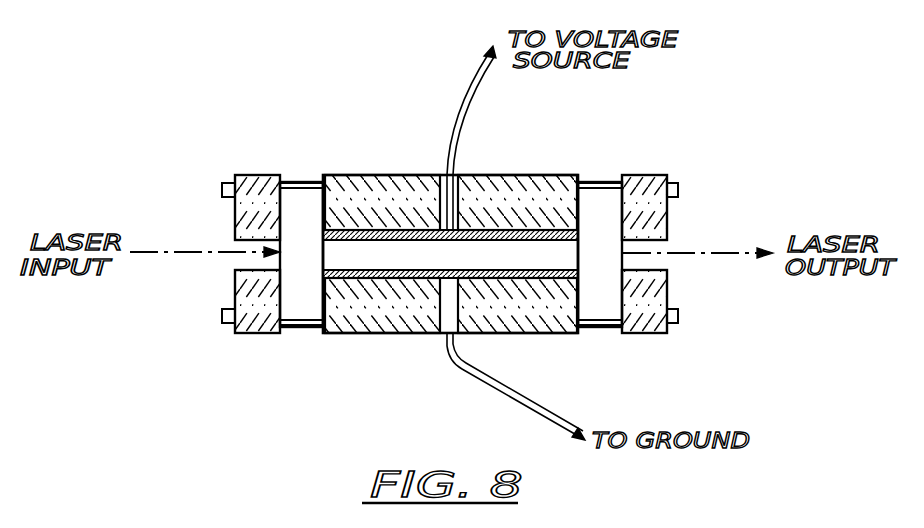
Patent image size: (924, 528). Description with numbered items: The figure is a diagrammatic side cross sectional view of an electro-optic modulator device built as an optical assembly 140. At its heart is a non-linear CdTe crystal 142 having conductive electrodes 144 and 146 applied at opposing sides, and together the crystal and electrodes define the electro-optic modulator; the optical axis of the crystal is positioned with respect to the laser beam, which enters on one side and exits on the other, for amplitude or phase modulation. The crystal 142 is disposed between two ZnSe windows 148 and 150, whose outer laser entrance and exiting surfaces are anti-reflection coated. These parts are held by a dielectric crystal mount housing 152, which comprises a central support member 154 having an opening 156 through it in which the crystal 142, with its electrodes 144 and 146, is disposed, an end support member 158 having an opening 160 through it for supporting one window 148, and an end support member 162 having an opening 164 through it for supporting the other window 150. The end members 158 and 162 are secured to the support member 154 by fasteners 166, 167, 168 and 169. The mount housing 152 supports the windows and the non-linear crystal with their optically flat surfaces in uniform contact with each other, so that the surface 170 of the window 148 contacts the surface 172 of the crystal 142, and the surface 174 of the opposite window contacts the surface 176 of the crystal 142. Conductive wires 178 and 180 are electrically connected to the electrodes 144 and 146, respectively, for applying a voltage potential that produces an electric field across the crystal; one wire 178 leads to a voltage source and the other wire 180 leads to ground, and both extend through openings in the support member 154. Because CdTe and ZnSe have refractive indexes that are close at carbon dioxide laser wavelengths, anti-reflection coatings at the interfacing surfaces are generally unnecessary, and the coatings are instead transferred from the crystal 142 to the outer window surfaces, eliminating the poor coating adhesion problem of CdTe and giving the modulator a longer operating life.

The optical assembly 140 is at (374, 104).
The non-linear CdTe crystal 142 is at (462, 253).
The conductive electrode 144 is at (512, 230).
The conductive electrode 146 is at (405, 262).
The ZnSe window 148 is at (312, 183).
The ZnSe window 150 is at (645, 222).
The dielectric crystal mount housing 152 is at (404, 168).
The support member 154 is at (655, 135).
The opening 156 is at (405, 262).
The end support member 158 is at (267, 173).
The opening 160 is at (256, 270).
The end support member 162 is at (650, 174).
The opening 164 is at (657, 268).
The fastener 166 is at (222, 187).
The fastener 167 is at (678, 188).
The fastener 168 is at (222, 316).
The fastener 169 is at (678, 314).
The surface of window 170 is at (343, 228).
The surface of crystal 172 is at (308, 332).
The surface of window 174 is at (575, 252).
The surface of crystal 176 is at (575, 252).
The conductive wire 178 is at (493, 70).
The conductive wire 180 is at (562, 418).